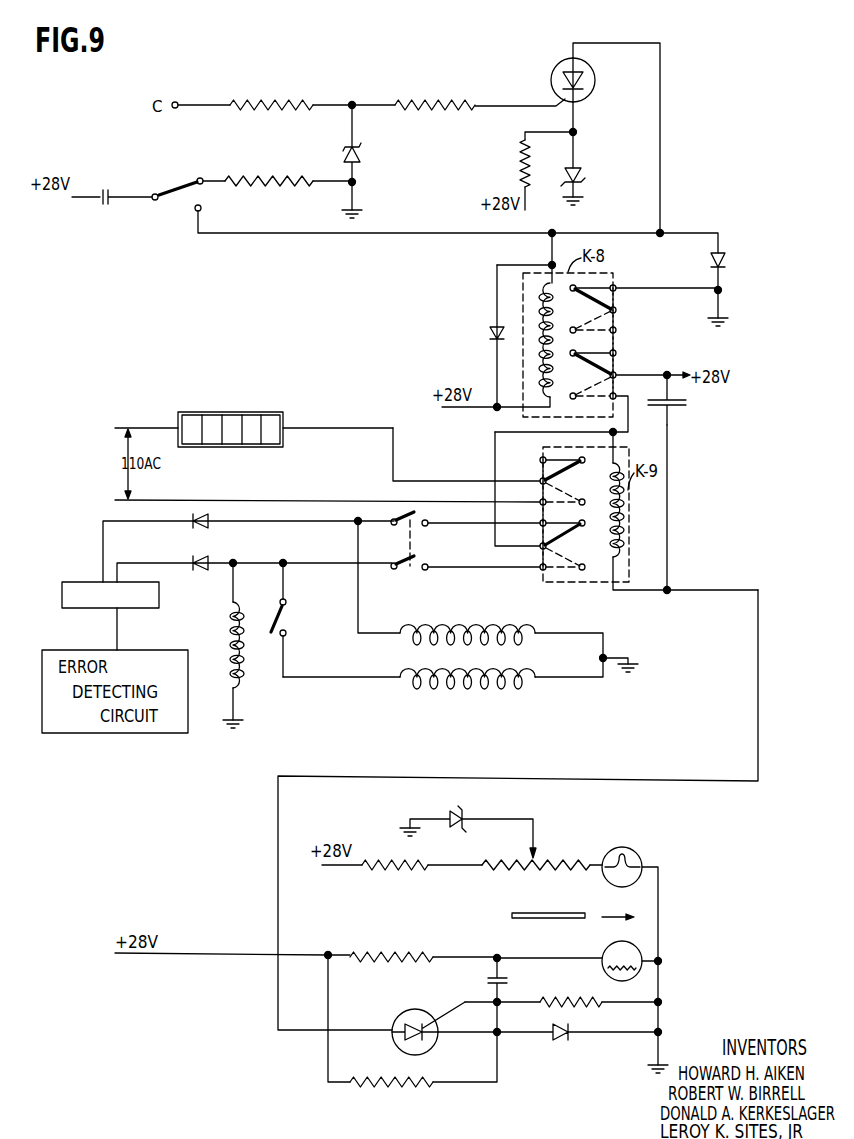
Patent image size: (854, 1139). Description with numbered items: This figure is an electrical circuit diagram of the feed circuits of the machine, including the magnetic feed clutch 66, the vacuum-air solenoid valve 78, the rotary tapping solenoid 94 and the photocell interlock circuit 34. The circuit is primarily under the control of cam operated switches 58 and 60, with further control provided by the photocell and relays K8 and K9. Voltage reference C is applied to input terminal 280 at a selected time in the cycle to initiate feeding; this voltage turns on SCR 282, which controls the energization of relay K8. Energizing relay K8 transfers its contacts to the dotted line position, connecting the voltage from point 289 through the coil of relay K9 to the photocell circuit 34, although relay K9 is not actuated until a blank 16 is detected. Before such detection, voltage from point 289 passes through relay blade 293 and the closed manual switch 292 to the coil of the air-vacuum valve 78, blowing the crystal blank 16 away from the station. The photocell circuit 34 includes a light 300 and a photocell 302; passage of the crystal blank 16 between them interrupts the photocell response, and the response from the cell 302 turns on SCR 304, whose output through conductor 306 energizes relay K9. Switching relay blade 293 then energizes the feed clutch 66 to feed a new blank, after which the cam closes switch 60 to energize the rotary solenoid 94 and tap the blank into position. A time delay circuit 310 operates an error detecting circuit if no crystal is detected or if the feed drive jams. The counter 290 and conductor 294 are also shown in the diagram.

The input terminal 280 is at (177, 101).
The cam operated switch 58 is at (174, 179).
The SCR 282 is at (547, 72).
The point 289 is at (671, 365).
The counter 290 is at (281, 410).
The manual switch 292 is at (411, 545).
The relay blade 293 is at (566, 536).
The conductor 294 is at (360, 620).
The vacuum-air solenoid valve 78 is at (483, 620).
The rotary tapping solenoid 94 is at (532, 668).
The cam operated switch 60 is at (285, 619).
The magnetic feed clutch 66 is at (238, 684).
The time delay circuit 310 is at (160, 597).
The conductor 306 is at (759, 742).
The light 300 is at (622, 847).
The photocell circuit 34 is at (691, 863).
The crystal blank 16 is at (510, 914).
The photocell 302 is at (642, 950).
The SCR 304 is at (410, 1009).